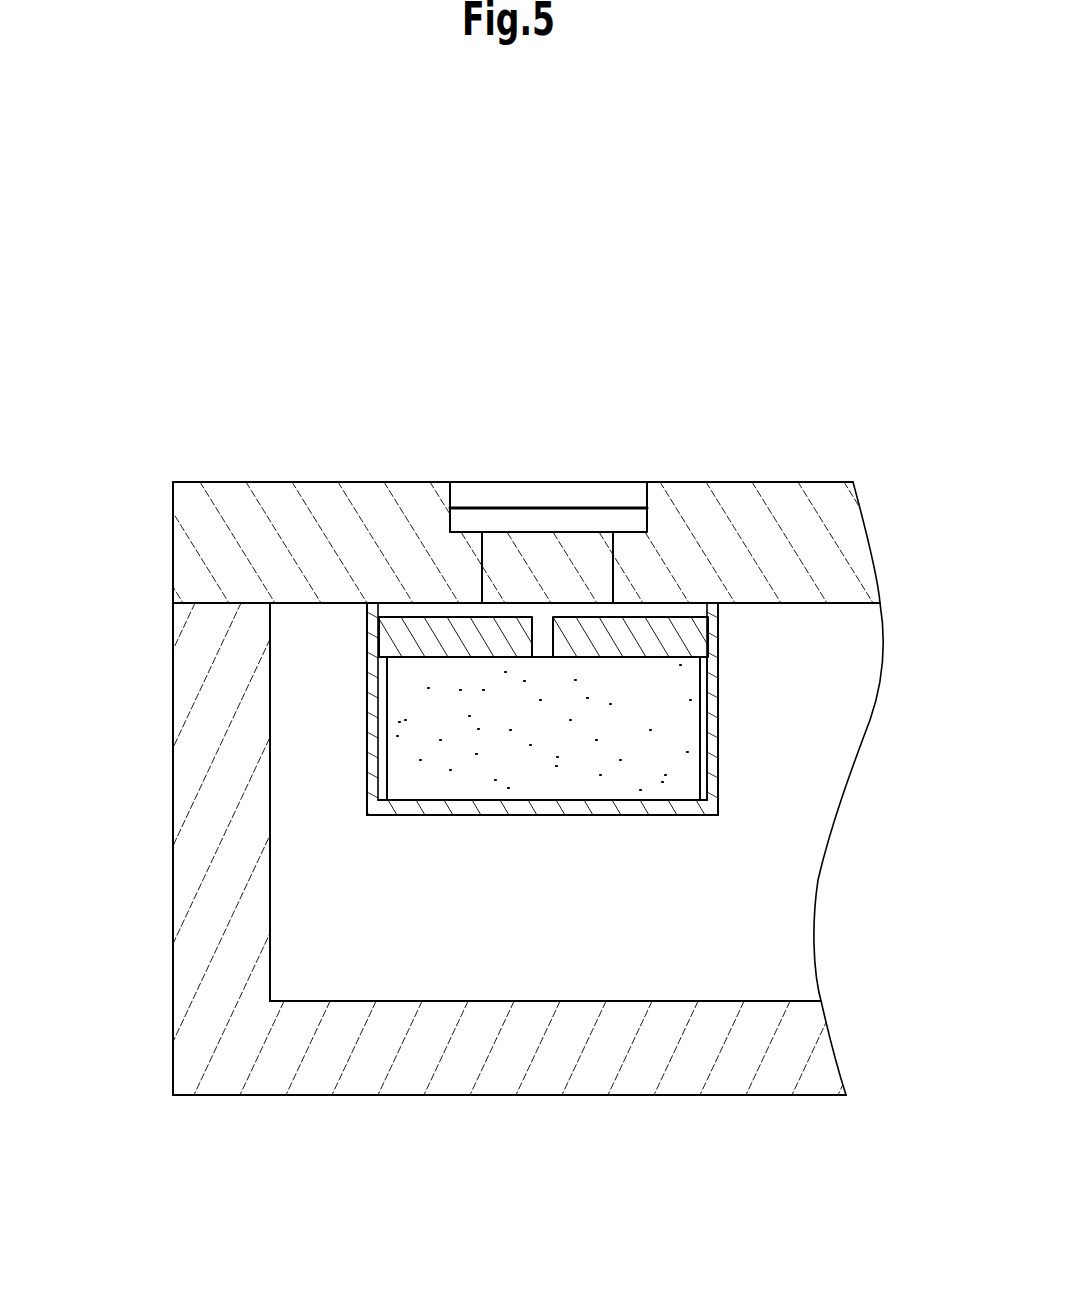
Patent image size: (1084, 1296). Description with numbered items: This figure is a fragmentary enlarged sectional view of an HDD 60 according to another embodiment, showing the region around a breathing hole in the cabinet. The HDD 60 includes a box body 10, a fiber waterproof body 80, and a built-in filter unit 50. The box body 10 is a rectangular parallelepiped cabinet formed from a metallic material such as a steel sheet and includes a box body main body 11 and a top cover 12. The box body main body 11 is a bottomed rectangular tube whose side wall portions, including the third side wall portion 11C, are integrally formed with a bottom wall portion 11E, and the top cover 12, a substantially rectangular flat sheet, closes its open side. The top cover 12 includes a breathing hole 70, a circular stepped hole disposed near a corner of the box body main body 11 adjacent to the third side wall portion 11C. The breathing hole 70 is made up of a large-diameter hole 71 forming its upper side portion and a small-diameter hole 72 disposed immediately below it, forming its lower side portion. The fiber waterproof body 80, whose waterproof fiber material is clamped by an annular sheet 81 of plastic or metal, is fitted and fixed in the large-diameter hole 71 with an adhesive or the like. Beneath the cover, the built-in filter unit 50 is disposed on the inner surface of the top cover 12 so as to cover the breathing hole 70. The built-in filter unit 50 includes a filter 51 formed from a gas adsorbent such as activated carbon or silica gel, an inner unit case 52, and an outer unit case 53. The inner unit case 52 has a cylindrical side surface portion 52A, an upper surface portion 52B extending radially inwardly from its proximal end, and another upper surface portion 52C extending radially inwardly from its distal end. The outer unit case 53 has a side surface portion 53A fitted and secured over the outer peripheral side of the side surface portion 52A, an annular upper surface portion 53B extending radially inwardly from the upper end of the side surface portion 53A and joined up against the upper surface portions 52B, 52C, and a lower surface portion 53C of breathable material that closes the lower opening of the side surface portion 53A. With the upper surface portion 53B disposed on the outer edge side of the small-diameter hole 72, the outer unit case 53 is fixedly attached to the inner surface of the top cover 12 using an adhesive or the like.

The box body 10 is at (188, 478).
The box body main body 11 is at (253, 1095).
The third side wall portion 11C is at (197, 732).
The bottom wall portion 11E is at (697, 1067).
The top cover 12 is at (270, 500).
The built-in filter unit 50 is at (722, 685).
The filter 51 is at (403, 682).
The inner unit case 52 is at (710, 763).
The side surface portion 52A is at (720, 643).
The upper surface portion 52B is at (380, 617).
The upper surface portion 52C is at (677, 627).
The outer unit case 53 is at (367, 717).
The side surface portion 53A is at (367, 753).
The annular upper surface portion 53B is at (667, 603).
The lower surface portion 53C is at (495, 813).
The HDD 60 is at (815, 363).
The breathing hole 70 is at (613, 553).
The large-diameter hole 71 is at (450, 518).
The small-diameter hole 72 is at (483, 577).
The fiber waterproof body 80 is at (630, 482).
The annular sheet 81 is at (557, 527).